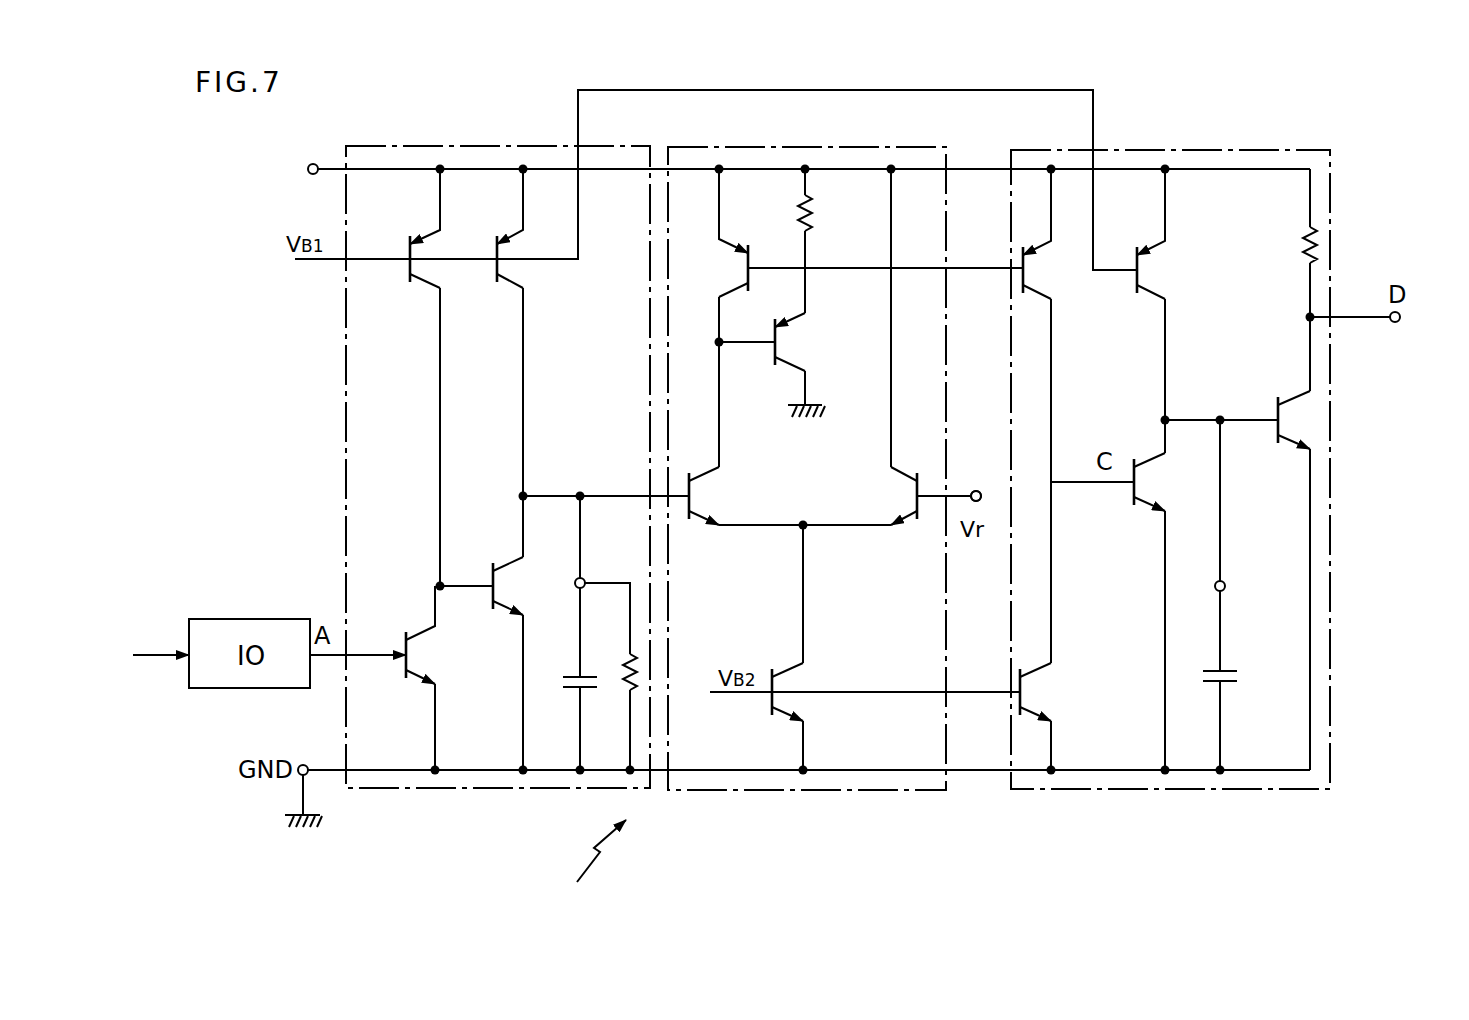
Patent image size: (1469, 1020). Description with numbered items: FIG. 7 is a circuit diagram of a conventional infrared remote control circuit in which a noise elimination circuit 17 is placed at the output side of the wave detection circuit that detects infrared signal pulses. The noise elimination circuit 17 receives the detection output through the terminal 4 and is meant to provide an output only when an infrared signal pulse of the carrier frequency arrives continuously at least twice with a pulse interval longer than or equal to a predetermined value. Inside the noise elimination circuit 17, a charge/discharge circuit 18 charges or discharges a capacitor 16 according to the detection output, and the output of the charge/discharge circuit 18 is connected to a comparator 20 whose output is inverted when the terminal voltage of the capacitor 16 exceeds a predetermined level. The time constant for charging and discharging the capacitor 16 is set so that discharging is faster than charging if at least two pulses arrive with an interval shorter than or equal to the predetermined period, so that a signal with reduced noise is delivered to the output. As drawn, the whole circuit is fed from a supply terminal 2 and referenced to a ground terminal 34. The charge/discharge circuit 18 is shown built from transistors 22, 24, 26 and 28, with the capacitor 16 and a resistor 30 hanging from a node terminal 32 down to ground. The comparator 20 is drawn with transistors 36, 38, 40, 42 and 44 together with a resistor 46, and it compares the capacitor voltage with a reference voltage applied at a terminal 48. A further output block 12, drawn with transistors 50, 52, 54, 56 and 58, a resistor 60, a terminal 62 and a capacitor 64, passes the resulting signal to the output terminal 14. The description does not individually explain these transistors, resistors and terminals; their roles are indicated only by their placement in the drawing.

The power supply terminal Vcc 2 is at (314, 164).
The terminal 4 is at (151, 656).
The output circuit 12 is at (1112, 791).
The output terminal 14 is at (1401, 318).
The capacitor 16 is at (573, 690).
The noise elimination circuit 17 is at (571, 905).
The charge/discharge circuit 18 is at (490, 790).
The comparator 20 is at (790, 792).
The transistor 22 is at (420, 659).
The transistor 24 is at (489, 607).
The transistor 26 is at (409, 279).
The transistor 28 is at (495, 279).
The resistor 30 is at (629, 692).
The node B terminal 32 is at (578, 590).
The ground terminal 34 is at (304, 764).
The transistor 36 is at (696, 500).
The transistor 38 is at (904, 498).
The transistor 40 is at (750, 252).
The transistor 42 is at (785, 343).
The transistor 44 is at (794, 685).
The resistor 46 is at (814, 225).
The reference voltage terminal 48 is at (975, 491).
The transistor 50 is at (1033, 273).
The transistor 52 is at (1029, 696).
The transistor 54 is at (1133, 505).
The transistor 56 is at (1147, 273).
The transistor 58 is at (1276, 447).
The resistor 60 is at (1304, 246).
The terminal 62 is at (1226, 588).
The capacitor 64 is at (1234, 678).